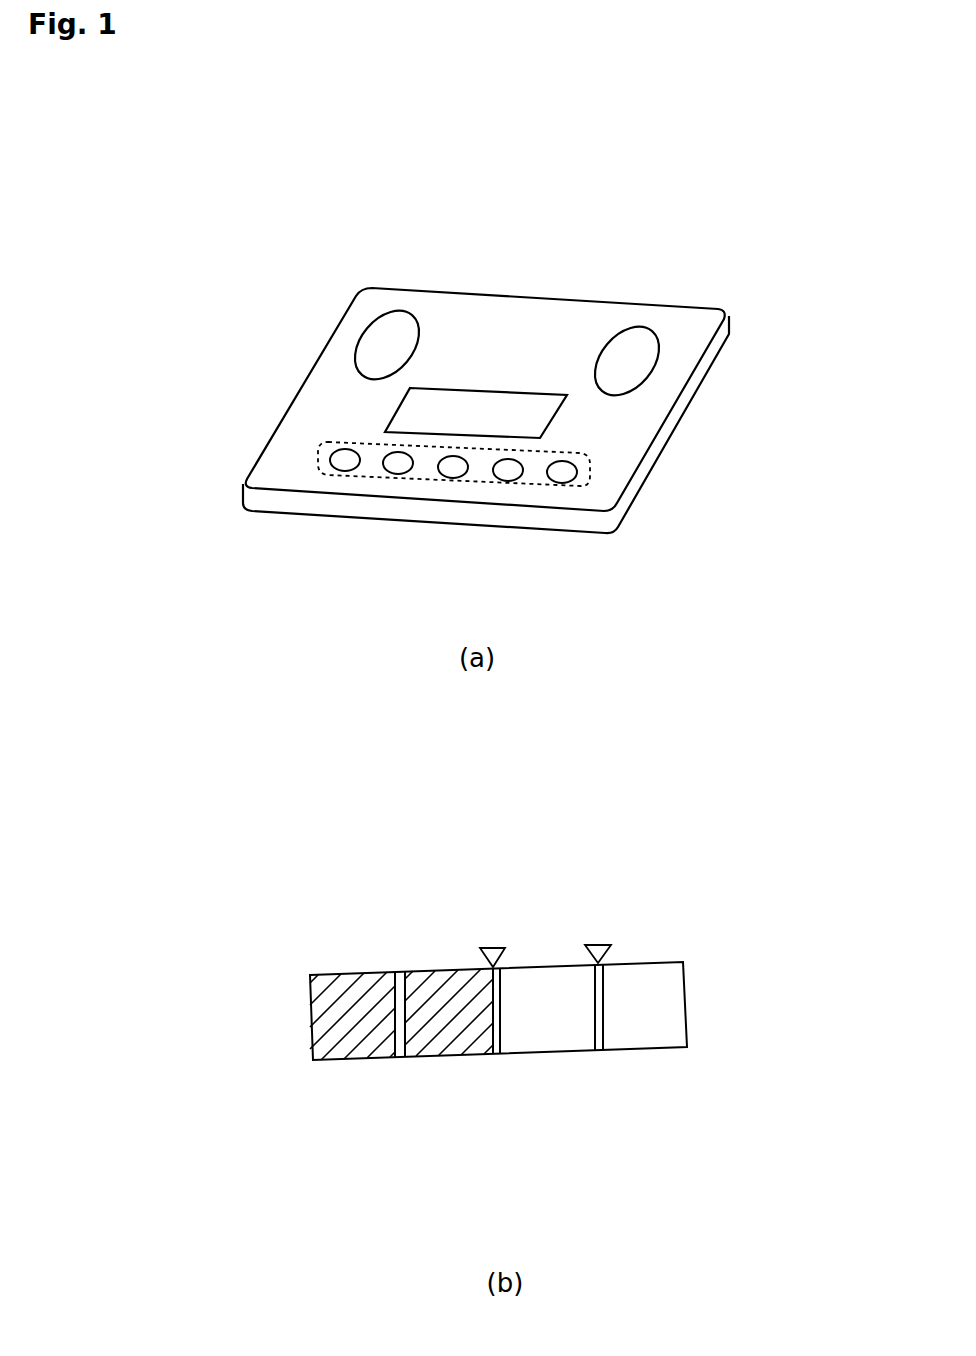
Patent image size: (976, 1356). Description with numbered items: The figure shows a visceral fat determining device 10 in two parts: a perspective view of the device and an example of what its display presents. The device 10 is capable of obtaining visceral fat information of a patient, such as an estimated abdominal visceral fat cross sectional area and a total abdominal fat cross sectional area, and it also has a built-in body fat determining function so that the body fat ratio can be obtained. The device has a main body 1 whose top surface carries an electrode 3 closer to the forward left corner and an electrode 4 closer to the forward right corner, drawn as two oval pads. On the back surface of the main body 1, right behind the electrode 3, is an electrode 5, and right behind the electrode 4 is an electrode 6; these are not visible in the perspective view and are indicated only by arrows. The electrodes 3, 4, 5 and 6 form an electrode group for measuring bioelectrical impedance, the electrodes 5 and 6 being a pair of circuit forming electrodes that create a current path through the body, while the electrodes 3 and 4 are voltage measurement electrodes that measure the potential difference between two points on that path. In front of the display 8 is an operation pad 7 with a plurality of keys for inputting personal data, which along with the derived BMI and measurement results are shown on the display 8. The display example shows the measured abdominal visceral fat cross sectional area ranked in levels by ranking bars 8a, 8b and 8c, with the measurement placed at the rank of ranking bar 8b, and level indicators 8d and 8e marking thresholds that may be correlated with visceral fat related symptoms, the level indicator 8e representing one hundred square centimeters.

The visceral fat determining device 10 is at (526, 334).
The main body 1 is at (678, 425).
The electrode 3 is at (393, 330).
The electrode 4 is at (637, 345).
The electrode 5 is at (290, 362).
The electrode 6 is at (725, 390).
The operation pad 7 is at (591, 470).
The display 8 is at (465, 403).
The ranking bar 8a is at (400, 1060).
The ranking bar 8b is at (497, 1052).
The ranking bar 8c is at (600, 1049).
The level indicator 8d is at (493, 948).
The level indicator 8e is at (598, 945).